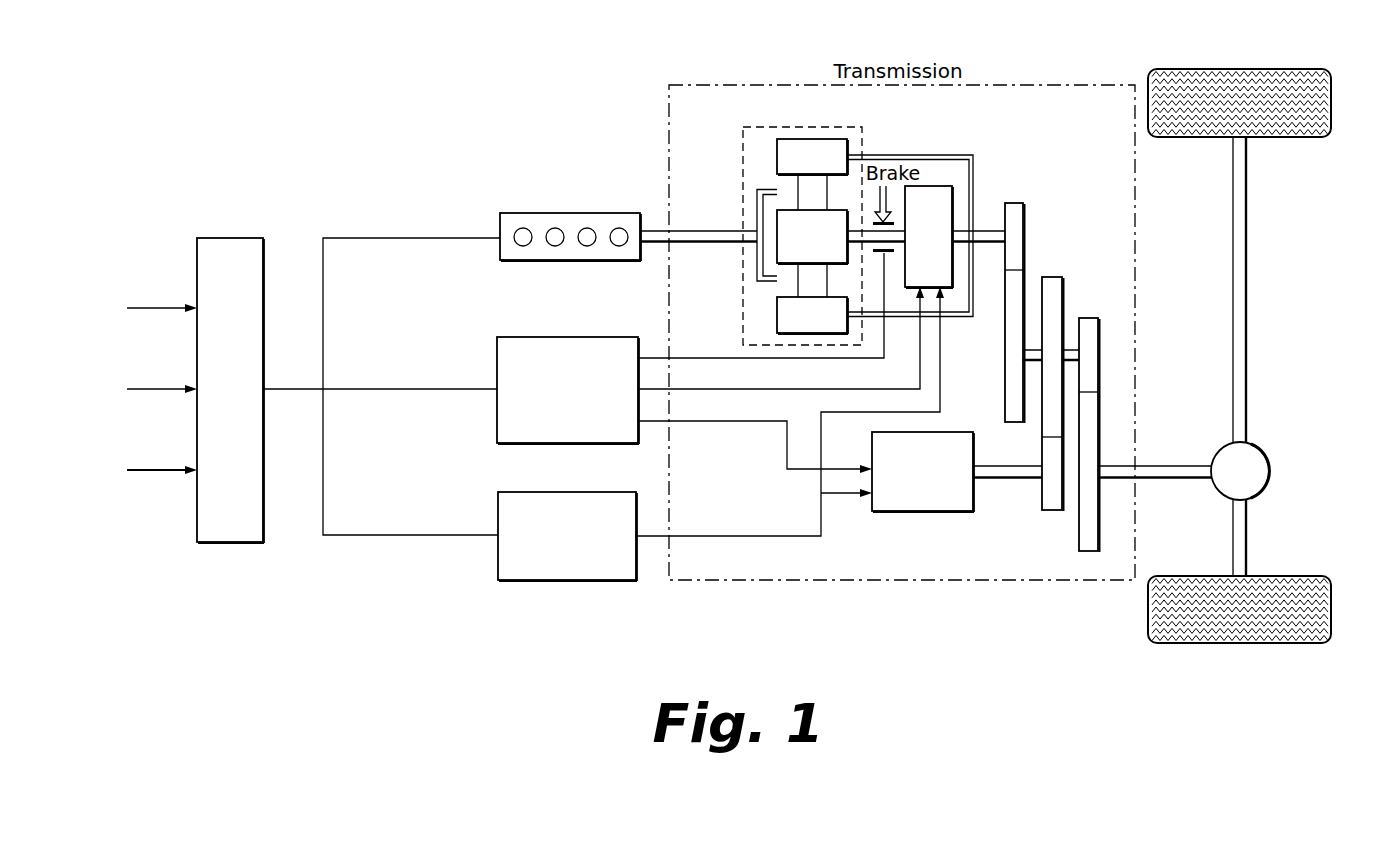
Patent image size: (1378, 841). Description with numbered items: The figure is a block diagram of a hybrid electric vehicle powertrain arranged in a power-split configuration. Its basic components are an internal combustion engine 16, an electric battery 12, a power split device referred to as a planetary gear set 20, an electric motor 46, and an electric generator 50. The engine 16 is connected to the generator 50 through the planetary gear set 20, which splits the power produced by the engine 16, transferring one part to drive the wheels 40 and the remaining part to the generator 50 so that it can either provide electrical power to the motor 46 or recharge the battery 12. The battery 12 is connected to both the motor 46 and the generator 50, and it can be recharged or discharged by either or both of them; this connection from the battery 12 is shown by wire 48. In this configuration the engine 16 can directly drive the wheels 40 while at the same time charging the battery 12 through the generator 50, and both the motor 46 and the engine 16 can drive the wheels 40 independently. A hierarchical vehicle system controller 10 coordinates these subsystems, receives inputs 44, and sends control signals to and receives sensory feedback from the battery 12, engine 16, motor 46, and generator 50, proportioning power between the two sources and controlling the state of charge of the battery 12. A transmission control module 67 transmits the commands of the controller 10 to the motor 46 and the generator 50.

The vehicle system controller 10 is at (233, 238).
The electric battery 12 is at (570, 492).
The internal combustion engine 16 is at (527, 213).
The planetary gear set 20 is at (872, 149).
The wheels 40 is at (1240, 69).
The controller inputs 44 is at (154, 389).
The electric motor 46 is at (913, 512).
The electrical connection / wire 48 is at (740, 537).
The electric generator 50 is at (952, 212).
The transmission control module 67 is at (583, 337).